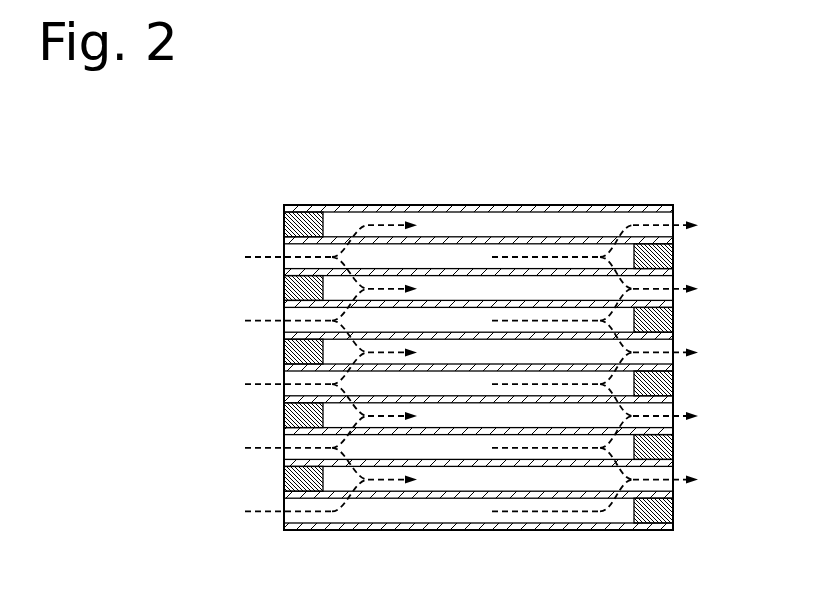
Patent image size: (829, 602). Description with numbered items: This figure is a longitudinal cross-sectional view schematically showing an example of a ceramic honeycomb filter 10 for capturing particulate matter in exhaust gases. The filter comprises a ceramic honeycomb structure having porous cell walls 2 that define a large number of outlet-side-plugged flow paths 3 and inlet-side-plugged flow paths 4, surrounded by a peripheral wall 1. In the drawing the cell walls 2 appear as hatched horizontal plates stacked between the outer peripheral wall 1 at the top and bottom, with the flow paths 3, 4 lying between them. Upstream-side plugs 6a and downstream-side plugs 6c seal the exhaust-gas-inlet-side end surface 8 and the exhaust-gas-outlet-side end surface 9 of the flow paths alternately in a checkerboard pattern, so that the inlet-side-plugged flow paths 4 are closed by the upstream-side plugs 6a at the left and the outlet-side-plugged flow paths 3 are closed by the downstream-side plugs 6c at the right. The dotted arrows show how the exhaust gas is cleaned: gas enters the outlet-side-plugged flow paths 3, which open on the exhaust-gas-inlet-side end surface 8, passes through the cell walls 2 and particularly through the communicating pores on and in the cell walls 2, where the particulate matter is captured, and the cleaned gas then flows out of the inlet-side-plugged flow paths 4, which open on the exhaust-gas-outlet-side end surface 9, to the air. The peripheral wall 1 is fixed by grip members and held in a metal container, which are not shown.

The ceramic honeycomb filter 10 is at (284, 172).
The peripheral wall 1 is at (362, 209).
The cell walls 2 is at (563, 240).
The outlet-side-plugged flow paths 3 is at (433, 257).
The inlet-side-plugged flow paths 4 is at (492, 292).
The upstream-side plugs 6a is at (296, 290).
The downstream-side plugs 6c is at (660, 322).
The exhaust-gas-inlet-side end surface 8 is at (284, 378).
The exhaust-gas-outlet-side end surface 9 is at (673, 360).